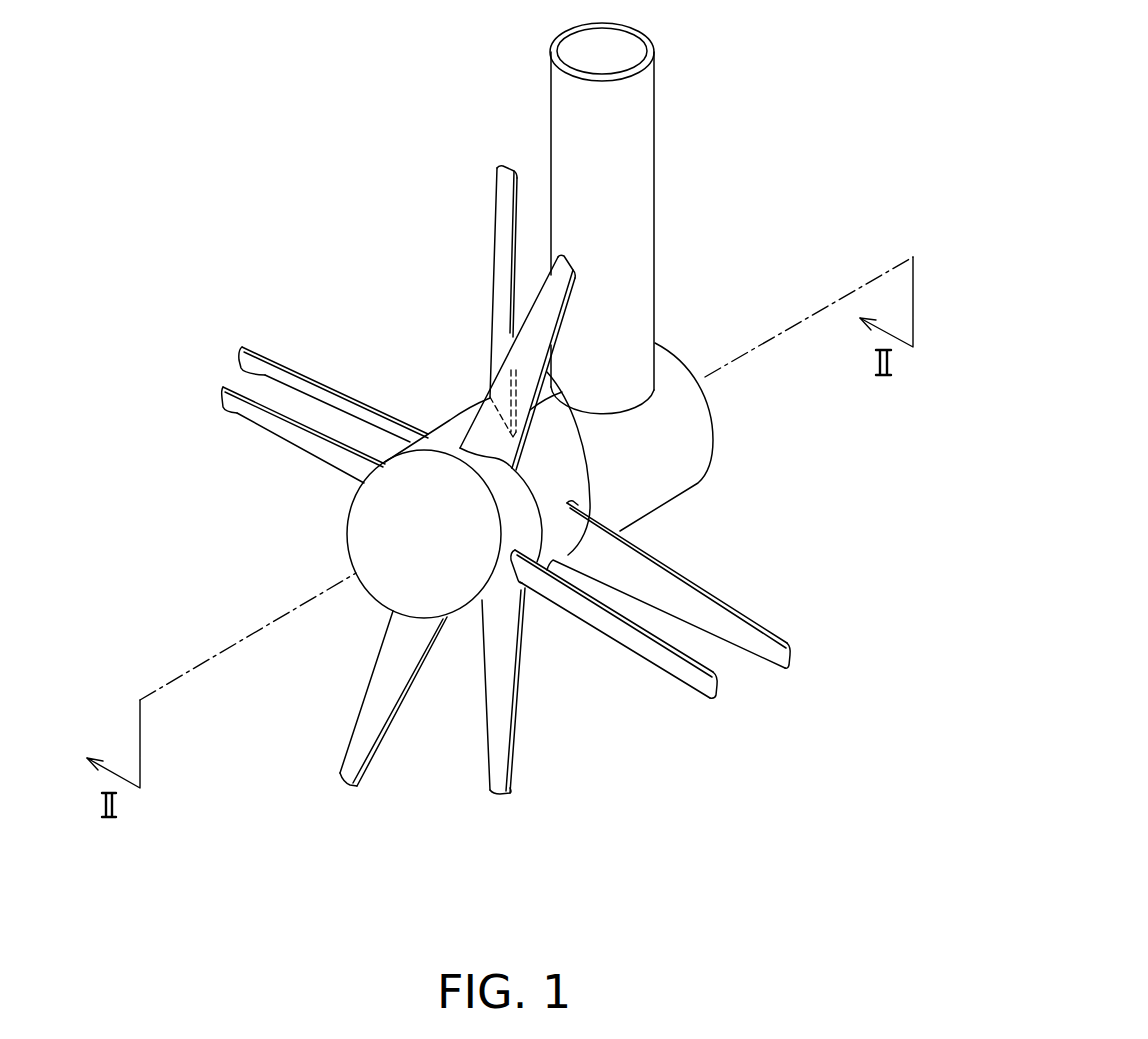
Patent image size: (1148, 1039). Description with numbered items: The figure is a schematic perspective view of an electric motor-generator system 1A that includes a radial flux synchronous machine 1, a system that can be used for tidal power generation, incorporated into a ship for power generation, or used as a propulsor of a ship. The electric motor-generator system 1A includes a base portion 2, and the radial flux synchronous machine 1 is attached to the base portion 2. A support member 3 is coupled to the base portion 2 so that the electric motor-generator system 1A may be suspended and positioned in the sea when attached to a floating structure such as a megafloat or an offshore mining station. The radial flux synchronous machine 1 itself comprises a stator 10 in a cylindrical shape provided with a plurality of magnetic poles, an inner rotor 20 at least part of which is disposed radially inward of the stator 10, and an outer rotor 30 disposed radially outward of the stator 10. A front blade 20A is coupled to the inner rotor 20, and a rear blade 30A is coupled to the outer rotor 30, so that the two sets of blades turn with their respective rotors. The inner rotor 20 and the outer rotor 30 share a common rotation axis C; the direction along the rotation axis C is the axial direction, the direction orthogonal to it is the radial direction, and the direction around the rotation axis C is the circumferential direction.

The electric motor-generator system 1A is at (780, 113).
The radial flux synchronous machine 1 is at (800, 440).
The base portion 2 is at (385, 568).
The support member 3 is at (633, 195).
The stator 10 is at (543, 448).
The inner rotor 20 is at (525, 485).
The outer rotor 30 is at (594, 498).
The front blade 20A is at (523, 357).
The rear blade 30A is at (503, 230).
The rotation axis C is at (287, 613).